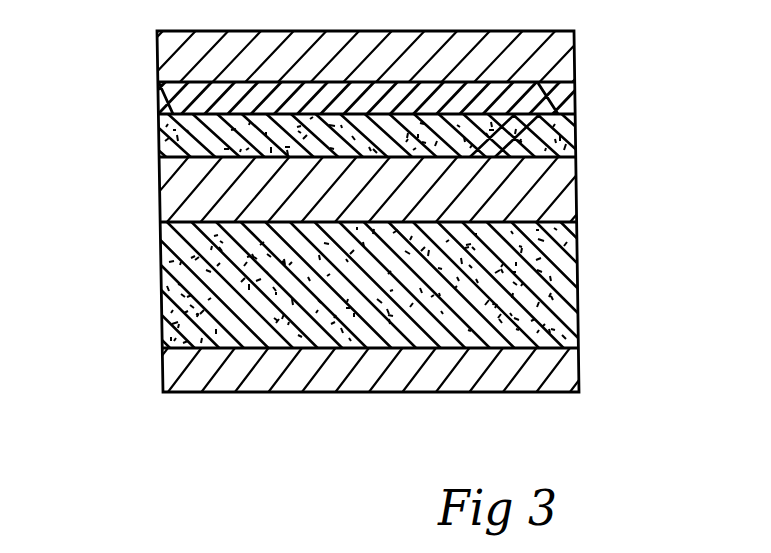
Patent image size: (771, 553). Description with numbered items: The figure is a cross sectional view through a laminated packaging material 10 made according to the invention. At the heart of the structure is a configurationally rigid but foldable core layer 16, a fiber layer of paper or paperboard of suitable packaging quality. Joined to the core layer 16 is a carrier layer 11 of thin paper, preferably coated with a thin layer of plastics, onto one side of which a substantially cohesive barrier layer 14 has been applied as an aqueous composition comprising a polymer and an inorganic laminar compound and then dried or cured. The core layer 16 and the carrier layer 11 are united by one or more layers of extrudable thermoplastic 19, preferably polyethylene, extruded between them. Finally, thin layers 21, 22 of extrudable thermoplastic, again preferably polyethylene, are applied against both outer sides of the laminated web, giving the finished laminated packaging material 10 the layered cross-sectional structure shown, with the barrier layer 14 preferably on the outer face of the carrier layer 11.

The laminated packaging material 10 is at (375, 211).
The thin layer of extrudable thermoplastic 21 is at (157, 52).
The barrier layer 14 is at (158, 103).
The carrier layer 11 is at (159, 140).
The layer of extrudable thermoplastic 19 is at (160, 190).
The core layer 16 is at (161, 277).
The thin layer of extrudable thermoplastic 22 is at (163, 372).